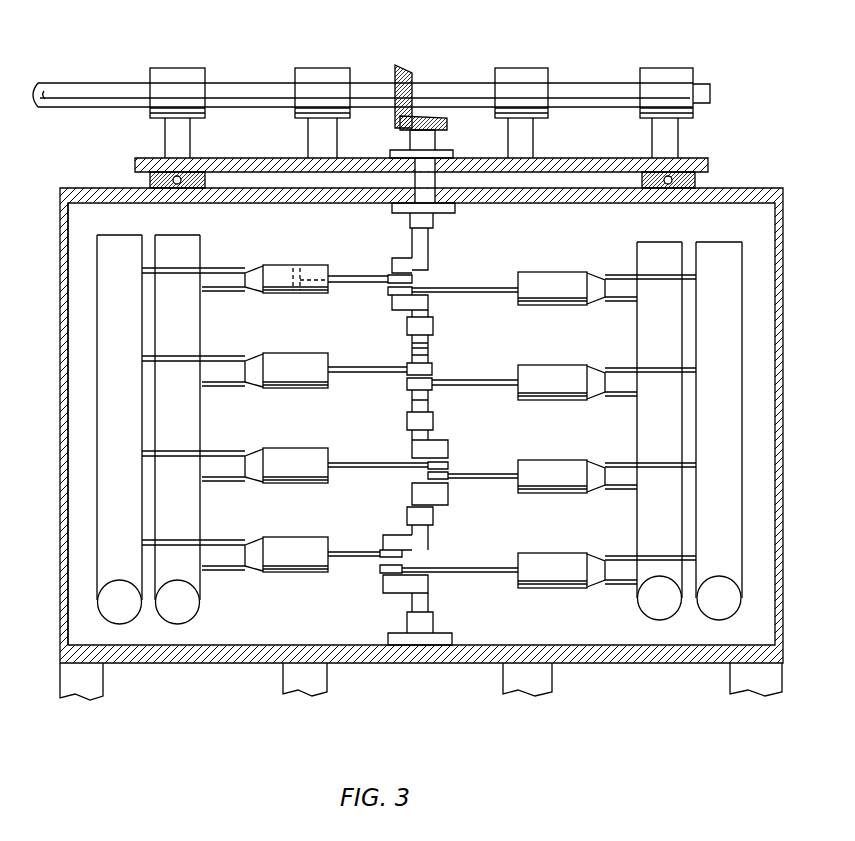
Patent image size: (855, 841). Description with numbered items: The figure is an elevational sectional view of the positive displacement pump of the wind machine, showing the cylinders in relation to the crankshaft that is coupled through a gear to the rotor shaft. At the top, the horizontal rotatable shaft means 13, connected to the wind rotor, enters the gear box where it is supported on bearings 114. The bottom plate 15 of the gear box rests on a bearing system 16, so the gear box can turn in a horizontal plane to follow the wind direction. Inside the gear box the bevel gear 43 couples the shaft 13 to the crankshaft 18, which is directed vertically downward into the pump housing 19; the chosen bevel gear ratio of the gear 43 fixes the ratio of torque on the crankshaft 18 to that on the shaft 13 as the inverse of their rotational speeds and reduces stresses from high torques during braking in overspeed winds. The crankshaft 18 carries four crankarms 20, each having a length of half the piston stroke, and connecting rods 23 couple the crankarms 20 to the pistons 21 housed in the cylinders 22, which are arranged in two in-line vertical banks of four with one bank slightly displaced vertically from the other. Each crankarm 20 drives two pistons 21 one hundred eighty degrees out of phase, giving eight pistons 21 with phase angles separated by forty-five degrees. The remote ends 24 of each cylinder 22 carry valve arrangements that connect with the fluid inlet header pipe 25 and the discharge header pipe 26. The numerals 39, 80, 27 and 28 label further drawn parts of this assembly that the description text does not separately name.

The rotatable shaft means 13 is at (105, 83).
The bearings 114 is at (295, 70).
The gear 43 is at (427, 70).
The bottom plate 15 is at (708, 163).
The bearing system 16 is at (150, 186).
The pump housing 19 is at (783, 230).
The pump assembly 39 is at (785, 259).
The crankshaft 18 is at (430, 258).
The crankarms 20 is at (400, 264).
The crank throw 80 is at (395, 538).
The cylinders 22 is at (320, 265).
The remote ends 24 is at (252, 278).
The upper guide rods 27 is at (242, 270).
The lower guide rods 28 is at (218, 291).
The connecting rods 23 is at (362, 285).
The pistons 21 is at (298, 292).
The discharge fluid line or header pipe 26 is at (98, 608).
The fluid inlet line or header pipe 25 is at (186, 624).